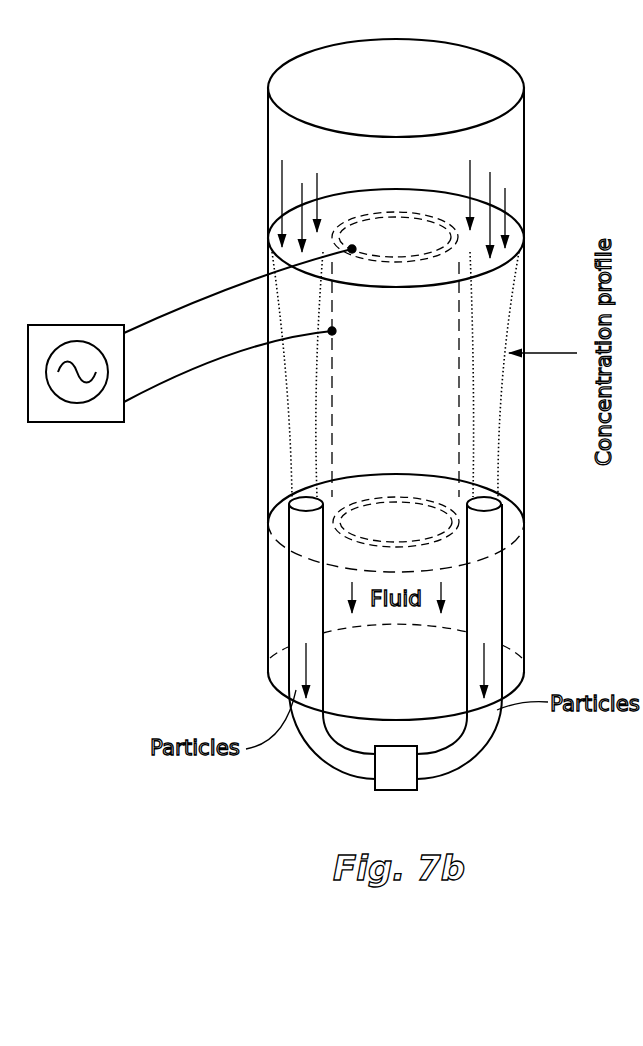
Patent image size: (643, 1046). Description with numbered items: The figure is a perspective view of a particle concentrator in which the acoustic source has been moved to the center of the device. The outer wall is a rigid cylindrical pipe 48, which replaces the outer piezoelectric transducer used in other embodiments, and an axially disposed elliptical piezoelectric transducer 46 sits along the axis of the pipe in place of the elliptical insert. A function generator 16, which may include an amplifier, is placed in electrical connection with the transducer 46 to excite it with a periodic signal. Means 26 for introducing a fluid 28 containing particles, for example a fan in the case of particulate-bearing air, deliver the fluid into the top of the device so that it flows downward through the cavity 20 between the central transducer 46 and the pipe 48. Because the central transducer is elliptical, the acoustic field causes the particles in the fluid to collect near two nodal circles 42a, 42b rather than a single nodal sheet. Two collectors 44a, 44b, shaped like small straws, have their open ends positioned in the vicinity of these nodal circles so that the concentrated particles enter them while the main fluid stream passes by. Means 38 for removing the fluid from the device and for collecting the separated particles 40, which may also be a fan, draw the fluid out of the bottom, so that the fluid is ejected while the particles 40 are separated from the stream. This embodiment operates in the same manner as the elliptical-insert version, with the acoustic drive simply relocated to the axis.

The function generator 16 is at (78, 429).
The cavity 20 is at (325, 211).
The means for introducing a fluid 26 is at (266, 144).
The fluid 28 is at (411, 173).
The means for removing the fluid and collecting the separated particles 38 is at (267, 594).
The separated particles 40 is at (408, 780).
The nodal circle 42a is at (305, 503).
The nodal circle 42b is at (490, 508).
The collector 44a is at (282, 633).
The collector 44b is at (509, 612).
The elliptical piezoelectric transducer 46 is at (447, 216).
The rigid cylindrical pipe 48 is at (266, 374).